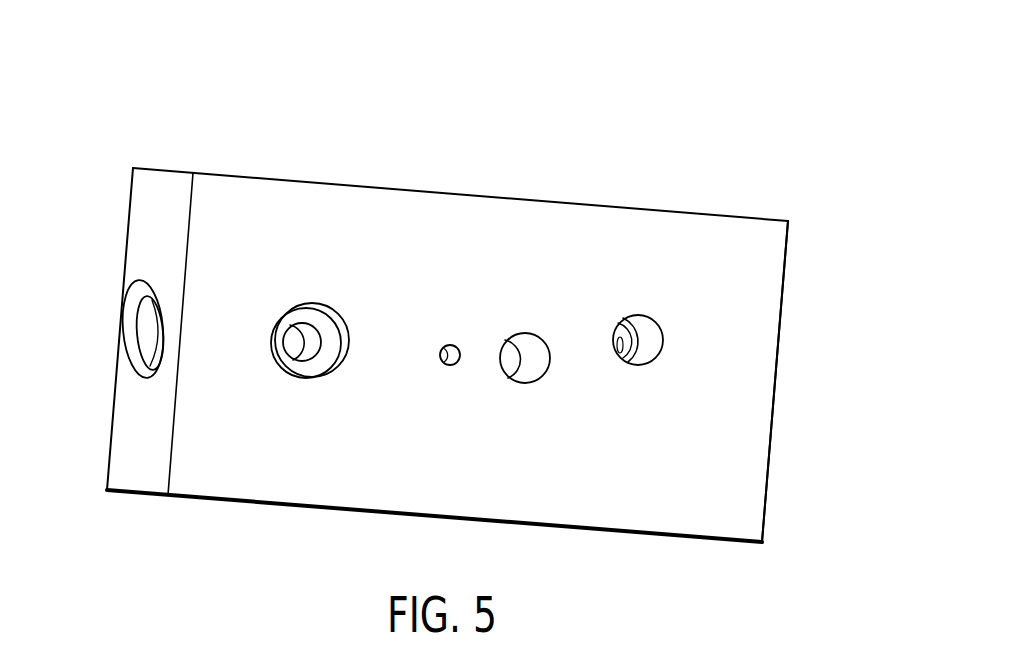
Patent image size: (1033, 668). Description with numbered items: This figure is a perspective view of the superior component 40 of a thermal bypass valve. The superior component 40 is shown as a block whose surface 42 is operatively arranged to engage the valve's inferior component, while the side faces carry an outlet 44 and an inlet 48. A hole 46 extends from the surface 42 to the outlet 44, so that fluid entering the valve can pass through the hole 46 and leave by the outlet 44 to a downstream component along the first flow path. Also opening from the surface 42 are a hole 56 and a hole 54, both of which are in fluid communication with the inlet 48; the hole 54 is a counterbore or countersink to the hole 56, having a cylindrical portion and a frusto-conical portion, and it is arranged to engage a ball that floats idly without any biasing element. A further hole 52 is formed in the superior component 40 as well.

The superior component 40 is at (788, 93).
The surface 42 is at (211, 480).
The outlet 44 is at (820, 388).
The hole 46 is at (510, 380).
The inlet 48 is at (125, 318).
The hole 52 is at (652, 313).
The hole 54 is at (343, 315).
The hole 56 is at (292, 322).